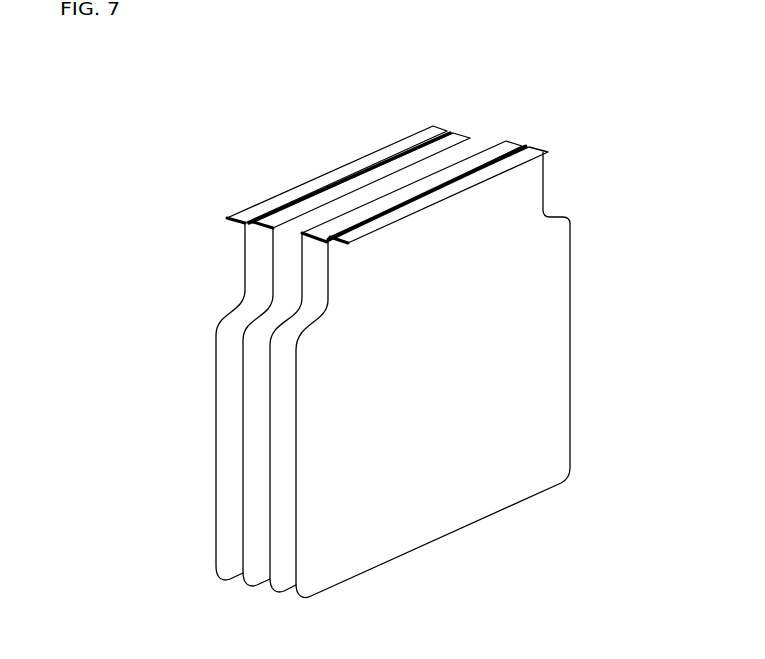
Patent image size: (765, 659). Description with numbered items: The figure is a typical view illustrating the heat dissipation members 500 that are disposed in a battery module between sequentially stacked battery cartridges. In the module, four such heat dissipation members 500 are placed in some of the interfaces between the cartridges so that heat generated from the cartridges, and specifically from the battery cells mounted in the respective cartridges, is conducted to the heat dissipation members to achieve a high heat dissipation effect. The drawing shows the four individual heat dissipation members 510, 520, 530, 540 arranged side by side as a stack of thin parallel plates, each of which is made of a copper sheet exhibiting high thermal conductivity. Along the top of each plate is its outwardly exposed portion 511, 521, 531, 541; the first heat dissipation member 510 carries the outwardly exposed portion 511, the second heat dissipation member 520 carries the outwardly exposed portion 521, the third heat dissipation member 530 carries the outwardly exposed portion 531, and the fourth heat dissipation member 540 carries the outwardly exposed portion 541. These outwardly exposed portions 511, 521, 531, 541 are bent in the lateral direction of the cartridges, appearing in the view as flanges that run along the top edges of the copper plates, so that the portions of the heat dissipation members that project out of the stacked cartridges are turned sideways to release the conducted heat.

The heat dissipation members 500 is at (103, 98).
The heat dissipation member 510 is at (255, 290).
The outwardly exposed portion 511 is at (325, 182).
The heat dissipation member 520 is at (257, 352).
The outwardly exposed portion 521 is at (405, 153).
The heat dissipation member 530 is at (277, 415).
The outwardly exposed portion 531 is at (536, 167).
The heat dissipation member 540 is at (435, 472).
The outwardly exposed portion 541 is at (478, 177).